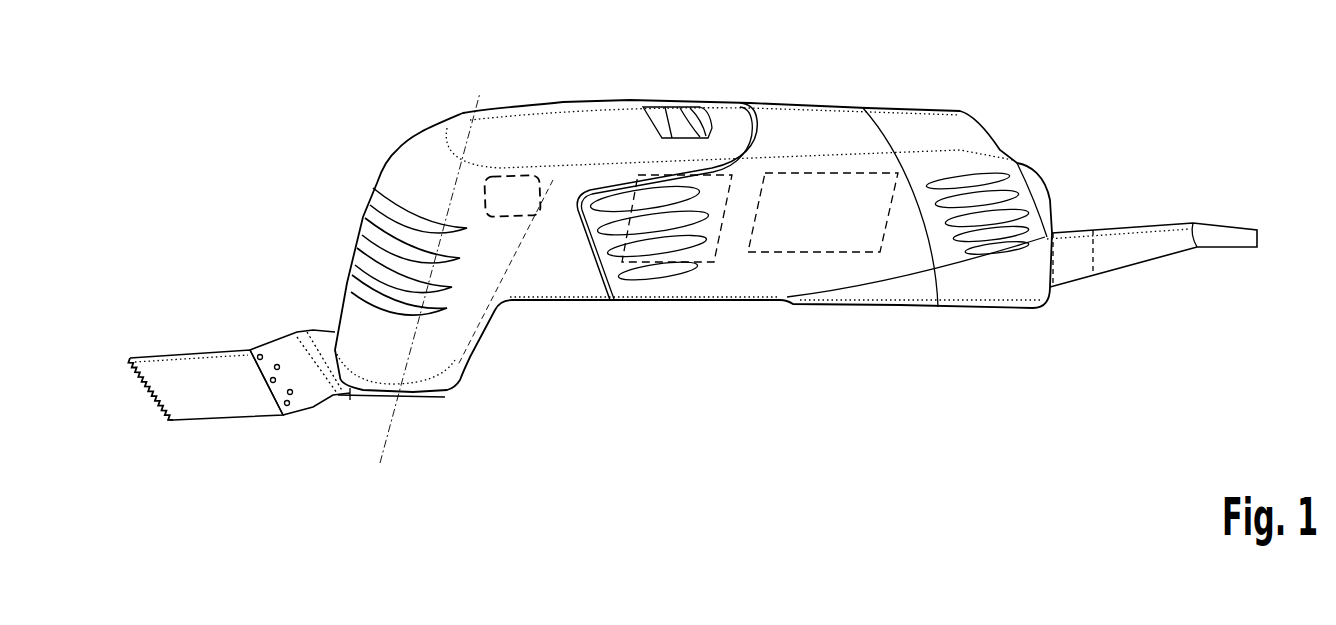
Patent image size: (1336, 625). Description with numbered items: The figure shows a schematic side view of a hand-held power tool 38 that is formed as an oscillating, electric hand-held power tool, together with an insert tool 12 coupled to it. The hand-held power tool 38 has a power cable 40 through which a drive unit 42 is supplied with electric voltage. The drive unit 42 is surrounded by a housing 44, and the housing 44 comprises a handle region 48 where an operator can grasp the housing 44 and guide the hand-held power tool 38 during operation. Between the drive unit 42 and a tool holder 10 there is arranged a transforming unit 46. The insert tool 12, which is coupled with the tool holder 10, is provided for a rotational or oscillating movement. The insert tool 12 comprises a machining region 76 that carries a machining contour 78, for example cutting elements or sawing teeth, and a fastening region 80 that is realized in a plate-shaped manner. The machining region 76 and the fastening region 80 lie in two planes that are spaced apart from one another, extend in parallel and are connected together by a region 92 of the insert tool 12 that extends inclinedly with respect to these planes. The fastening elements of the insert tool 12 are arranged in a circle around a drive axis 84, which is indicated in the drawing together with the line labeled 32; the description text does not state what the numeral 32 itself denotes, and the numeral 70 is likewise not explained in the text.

The tool holder 10 is at (412, 408).
The insert tool 12 is at (223, 417).
The output shaft axis 32 is at (477, 107).
The drive axis 84 is at (416, 262).
The hand-held power tool 38 is at (593, 85).
The power cable 40 is at (1130, 243).
The drive unit 42 is at (832, 173).
The housing 44 is at (577, 275).
The transforming unit 46 is at (717, 175).
The handle region 48 is at (783, 133).
The control element 70 is at (527, 173).
The machining region 76 is at (197, 370).
The machining contour 78 is at (140, 383).
The fastening region 80 is at (350, 390).
The inclined region 92 is at (300, 353).